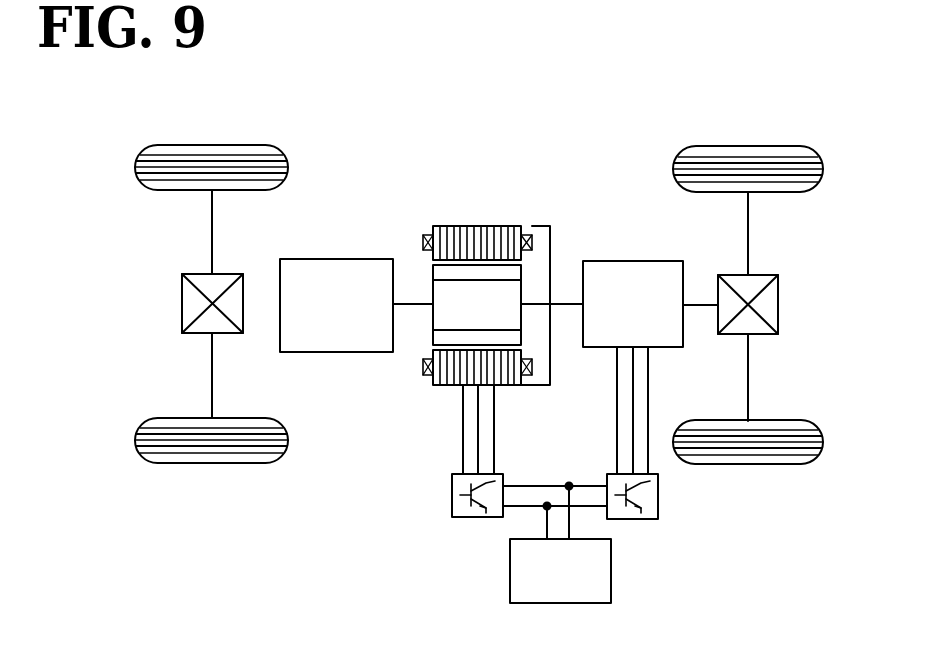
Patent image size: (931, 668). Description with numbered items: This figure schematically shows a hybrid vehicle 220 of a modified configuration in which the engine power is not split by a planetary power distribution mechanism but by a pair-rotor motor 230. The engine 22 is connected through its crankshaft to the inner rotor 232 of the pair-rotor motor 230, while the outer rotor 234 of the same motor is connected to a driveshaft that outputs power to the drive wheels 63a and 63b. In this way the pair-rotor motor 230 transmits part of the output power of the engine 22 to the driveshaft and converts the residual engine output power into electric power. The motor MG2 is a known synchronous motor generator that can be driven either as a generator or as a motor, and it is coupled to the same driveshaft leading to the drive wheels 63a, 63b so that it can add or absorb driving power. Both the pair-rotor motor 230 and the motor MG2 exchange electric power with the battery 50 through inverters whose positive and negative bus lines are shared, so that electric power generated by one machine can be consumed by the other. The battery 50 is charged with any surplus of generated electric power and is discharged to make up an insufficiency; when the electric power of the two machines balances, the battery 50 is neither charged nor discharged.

The engine 22 is at (336, 352).
The hybrid vehicle 220 is at (577, 151).
The pair-rotor motor 230 is at (482, 158).
The inner rotor 232 is at (433, 288).
The outer rotor 234 is at (478, 226).
The motor MG2 is at (632, 261).
The battery 50 is at (611, 565).
The drive wheel 63a is at (748, 146).
The drive wheel 63b is at (748, 464).